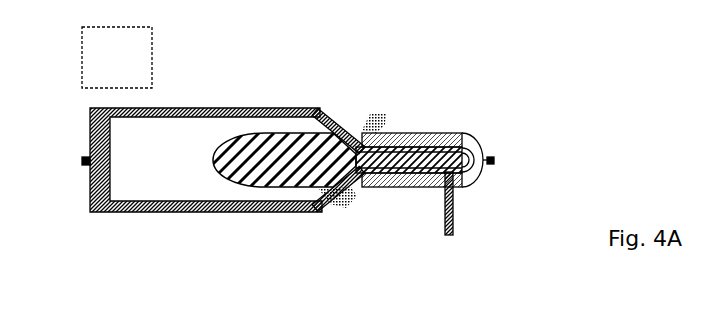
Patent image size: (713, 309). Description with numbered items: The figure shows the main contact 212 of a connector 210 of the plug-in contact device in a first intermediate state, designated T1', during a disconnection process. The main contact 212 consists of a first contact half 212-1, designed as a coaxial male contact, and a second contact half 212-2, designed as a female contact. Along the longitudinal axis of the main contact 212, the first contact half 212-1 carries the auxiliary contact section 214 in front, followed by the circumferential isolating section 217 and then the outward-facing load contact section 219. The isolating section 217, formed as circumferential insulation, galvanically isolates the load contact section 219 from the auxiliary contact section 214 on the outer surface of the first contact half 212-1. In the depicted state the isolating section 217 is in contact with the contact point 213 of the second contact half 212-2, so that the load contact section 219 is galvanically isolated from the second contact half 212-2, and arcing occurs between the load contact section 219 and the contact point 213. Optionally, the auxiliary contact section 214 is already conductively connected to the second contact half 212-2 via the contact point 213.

The connector 210 is at (688, 179).
The main contact 212 is at (300, 88).
The first contact half 212-1 is at (215, 242).
The second contact half 212-2 is at (192, 210).
The contact point 213 is at (353, 124).
The auxiliary contact section 214 is at (280, 133).
The isolating section 217 is at (390, 130).
The load contact section 219 is at (457, 131).